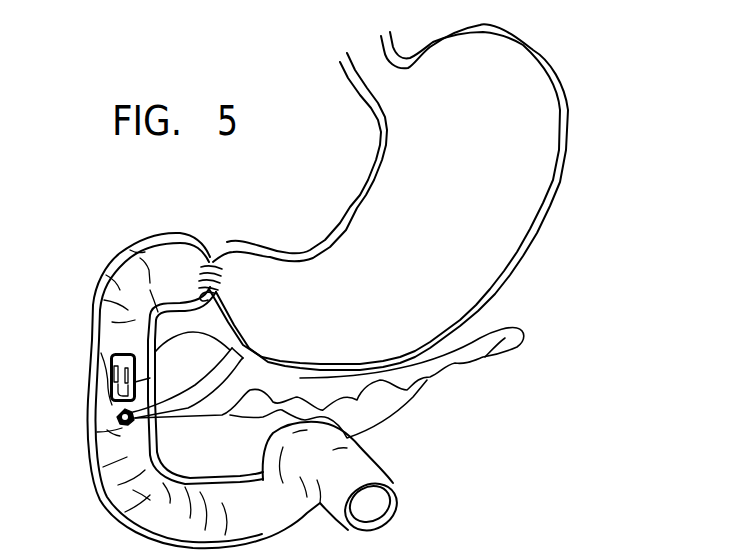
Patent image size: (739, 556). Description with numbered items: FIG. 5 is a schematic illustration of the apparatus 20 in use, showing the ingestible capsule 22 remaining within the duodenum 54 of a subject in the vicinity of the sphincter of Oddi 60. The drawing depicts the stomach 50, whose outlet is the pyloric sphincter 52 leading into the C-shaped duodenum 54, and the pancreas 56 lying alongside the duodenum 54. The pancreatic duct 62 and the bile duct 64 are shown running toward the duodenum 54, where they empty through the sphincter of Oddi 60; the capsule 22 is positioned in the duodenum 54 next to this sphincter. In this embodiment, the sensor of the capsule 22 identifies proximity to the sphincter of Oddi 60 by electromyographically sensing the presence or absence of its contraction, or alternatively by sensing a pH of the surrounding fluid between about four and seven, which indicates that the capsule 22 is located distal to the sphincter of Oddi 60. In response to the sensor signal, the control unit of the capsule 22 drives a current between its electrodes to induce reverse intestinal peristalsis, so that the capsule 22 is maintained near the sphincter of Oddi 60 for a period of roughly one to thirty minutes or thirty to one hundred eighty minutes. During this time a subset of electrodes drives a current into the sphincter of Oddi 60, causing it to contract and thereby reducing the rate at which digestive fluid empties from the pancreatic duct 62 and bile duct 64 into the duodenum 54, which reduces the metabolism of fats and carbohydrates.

The apparatus 20 is at (601, 69).
The ingestible capsule 22 is at (110, 362).
The stomach 50 is at (530, 242).
The pyloric sphincter 52 is at (213, 257).
The duodenum 54 is at (86, 453).
The pancreas 56 is at (457, 368).
The sphincter of Oddi 60 is at (115, 407).
The pancreatic duct 62 is at (217, 419).
The bile duct 64 is at (252, 347).